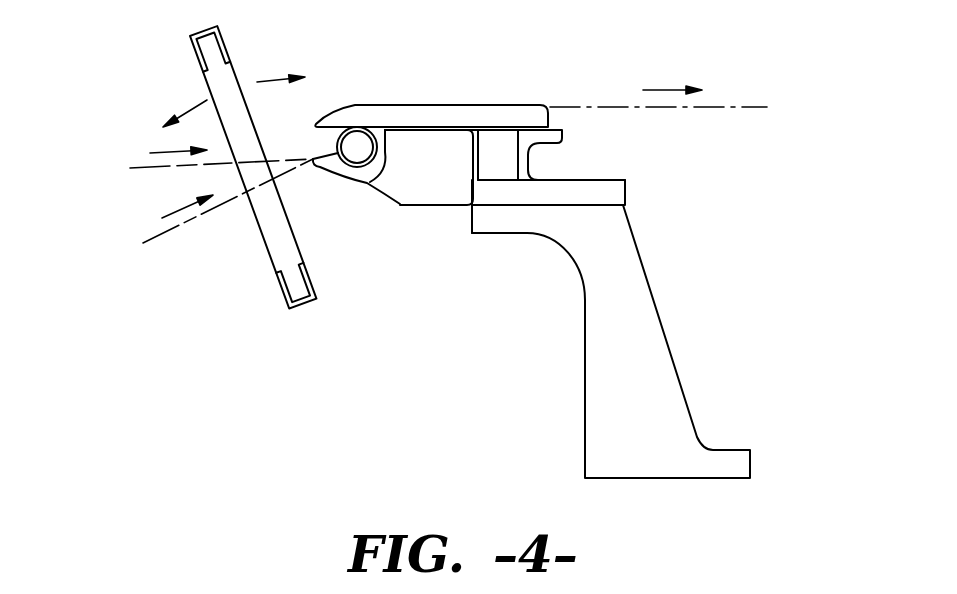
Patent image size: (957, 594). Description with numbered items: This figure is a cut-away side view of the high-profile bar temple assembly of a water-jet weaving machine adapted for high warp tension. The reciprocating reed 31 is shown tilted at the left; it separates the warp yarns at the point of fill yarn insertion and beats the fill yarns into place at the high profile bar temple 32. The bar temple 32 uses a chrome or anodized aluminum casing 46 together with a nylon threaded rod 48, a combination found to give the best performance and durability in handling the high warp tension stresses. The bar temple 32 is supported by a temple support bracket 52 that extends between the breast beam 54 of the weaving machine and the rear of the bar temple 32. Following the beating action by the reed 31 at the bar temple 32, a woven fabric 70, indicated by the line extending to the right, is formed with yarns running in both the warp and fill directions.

The reciprocating reed 31 is at (233, 77).
The high profile bar temple 32 is at (537, 72).
The casing 46 is at (343, 181).
The nylon threaded rod 48 is at (353, 137).
The temple support bracket 52 is at (638, 249).
The breast beam 54 is at (601, 180).
The woven fabric 70 is at (720, 107).